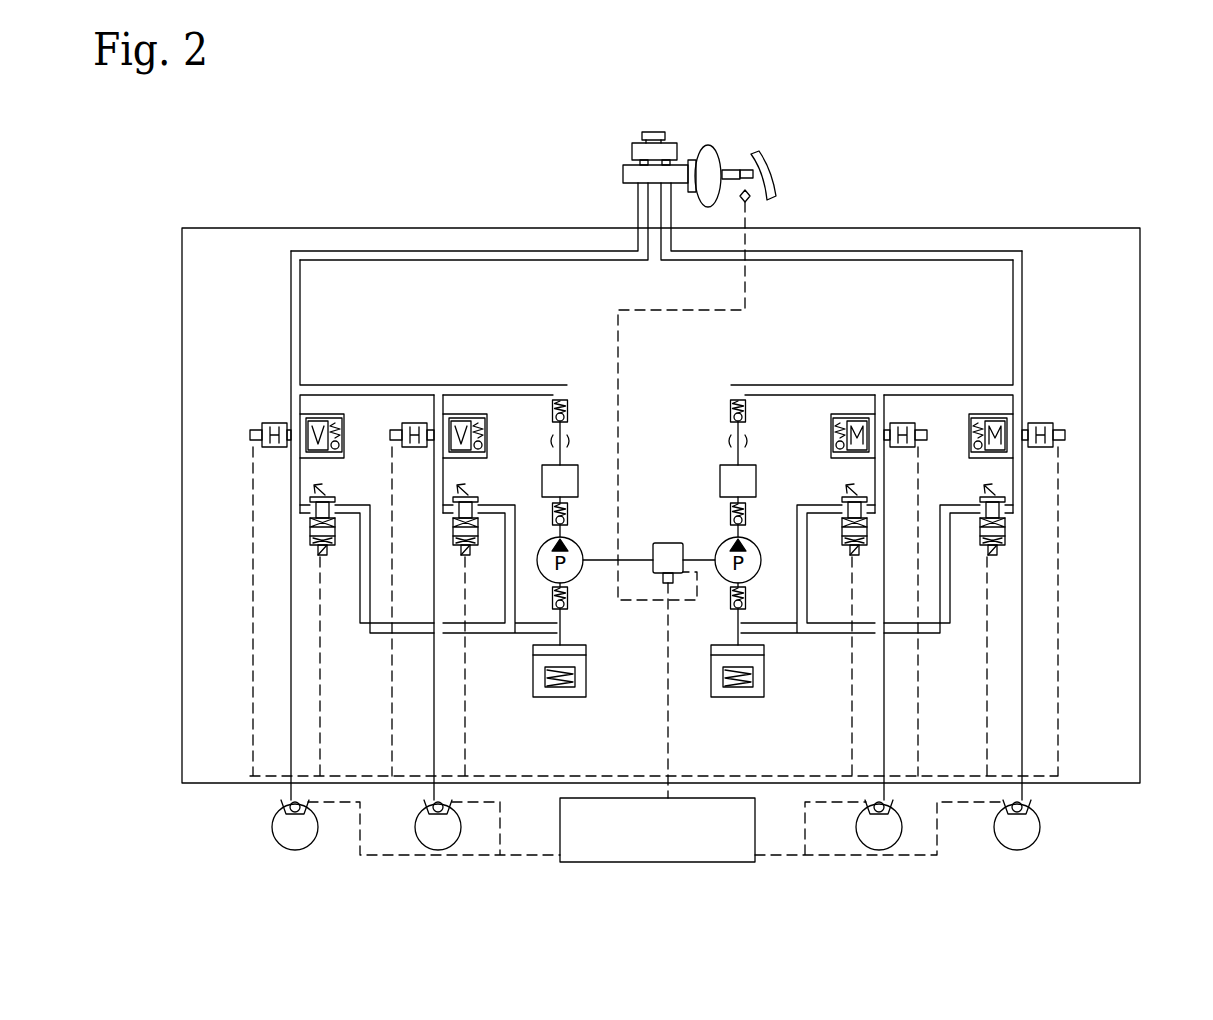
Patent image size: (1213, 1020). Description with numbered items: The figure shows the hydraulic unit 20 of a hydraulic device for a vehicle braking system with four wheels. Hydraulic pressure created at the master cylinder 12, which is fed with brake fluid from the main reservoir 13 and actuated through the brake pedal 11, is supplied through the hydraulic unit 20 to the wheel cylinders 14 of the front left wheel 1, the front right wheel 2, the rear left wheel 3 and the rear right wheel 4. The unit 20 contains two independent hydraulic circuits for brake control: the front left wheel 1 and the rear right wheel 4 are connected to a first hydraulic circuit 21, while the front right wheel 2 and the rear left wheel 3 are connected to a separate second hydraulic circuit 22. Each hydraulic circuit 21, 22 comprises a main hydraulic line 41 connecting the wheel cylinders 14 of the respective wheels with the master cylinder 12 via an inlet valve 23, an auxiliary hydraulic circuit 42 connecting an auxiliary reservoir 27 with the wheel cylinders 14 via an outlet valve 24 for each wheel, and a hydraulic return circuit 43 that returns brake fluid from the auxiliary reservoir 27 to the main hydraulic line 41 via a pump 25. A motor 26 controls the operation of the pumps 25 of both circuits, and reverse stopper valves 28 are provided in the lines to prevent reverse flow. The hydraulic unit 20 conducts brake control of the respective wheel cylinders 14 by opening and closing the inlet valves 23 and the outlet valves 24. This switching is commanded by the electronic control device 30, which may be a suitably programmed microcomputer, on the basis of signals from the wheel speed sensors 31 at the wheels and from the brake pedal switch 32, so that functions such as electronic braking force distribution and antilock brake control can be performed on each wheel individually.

The front left wheel 1 is at (318, 838).
The front right wheel 2 is at (1040, 840).
The rear left wheel 3 is at (902, 835).
The rear right wheel 4 is at (461, 838).
The brake pedal 11 is at (770, 162).
The master cylinder 12 is at (623, 178).
The main reservoir 13 is at (632, 150).
The wheel cylinders 14 is at (281, 812).
The hydraulic unit 20 is at (1140, 228).
The first hydraulic circuit 21 is at (300, 250).
The second hydraulic circuit 22 is at (845, 251).
The inlet valve 23 is at (268, 422).
The outlet valve 24 is at (332, 497).
The pump 25 is at (720, 548).
The motor 26 is at (665, 543).
The auxiliary reservoir 27 is at (565, 697).
The reverse stopper valves 28 is at (565, 400).
The electronic control device 30 is at (612, 862).
The wheel speed sensor 31 is at (281, 800).
The brake pedal switch 32 is at (750, 200).
The main hydraulic line 41 is at (291, 305).
The auxiliary hydraulic circuit 42 is at (360, 600).
The hydraulic return circuit 43 is at (752, 432).